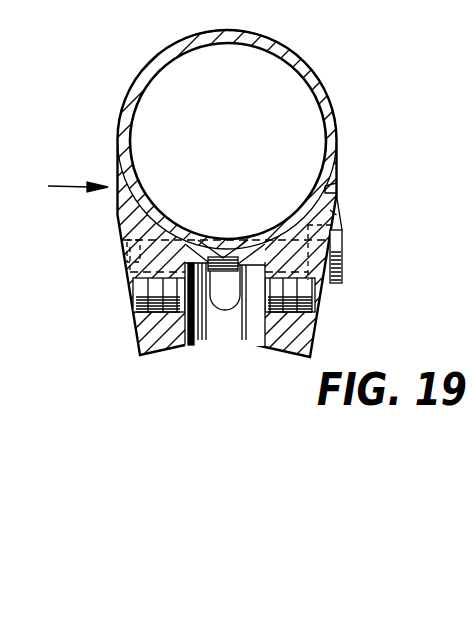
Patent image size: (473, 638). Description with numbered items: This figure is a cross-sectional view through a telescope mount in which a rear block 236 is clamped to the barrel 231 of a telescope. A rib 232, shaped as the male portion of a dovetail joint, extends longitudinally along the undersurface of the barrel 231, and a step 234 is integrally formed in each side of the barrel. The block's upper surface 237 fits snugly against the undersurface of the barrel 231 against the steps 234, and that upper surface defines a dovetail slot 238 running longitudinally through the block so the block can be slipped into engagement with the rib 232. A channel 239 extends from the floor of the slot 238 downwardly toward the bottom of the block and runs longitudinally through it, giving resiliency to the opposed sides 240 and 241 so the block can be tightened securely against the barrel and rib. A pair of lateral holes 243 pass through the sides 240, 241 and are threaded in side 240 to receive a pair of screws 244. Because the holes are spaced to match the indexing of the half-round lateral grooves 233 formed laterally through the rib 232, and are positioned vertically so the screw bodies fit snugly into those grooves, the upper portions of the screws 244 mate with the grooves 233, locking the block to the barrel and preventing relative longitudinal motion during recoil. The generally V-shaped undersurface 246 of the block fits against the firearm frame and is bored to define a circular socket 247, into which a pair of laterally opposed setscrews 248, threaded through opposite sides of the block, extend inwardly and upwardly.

The barrel 231 is at (130, 90).
The rib 232 is at (248, 238).
The half-round lateral grooves 233 is at (237, 242).
The step 234 is at (337, 186).
The rear block 236 is at (58, 187).
The upper surface 237 is at (337, 203).
The dovetail slot 238 is at (193, 242).
The channel 239 is at (222, 340).
The side 240 is at (117, 212).
The side 241 is at (335, 218).
The lateral holes 243 is at (122, 250).
The screws 244 is at (127, 262).
The undersurface 246 is at (285, 353).
The circular socket 247 is at (192, 347).
The setscrews 248 is at (137, 303).